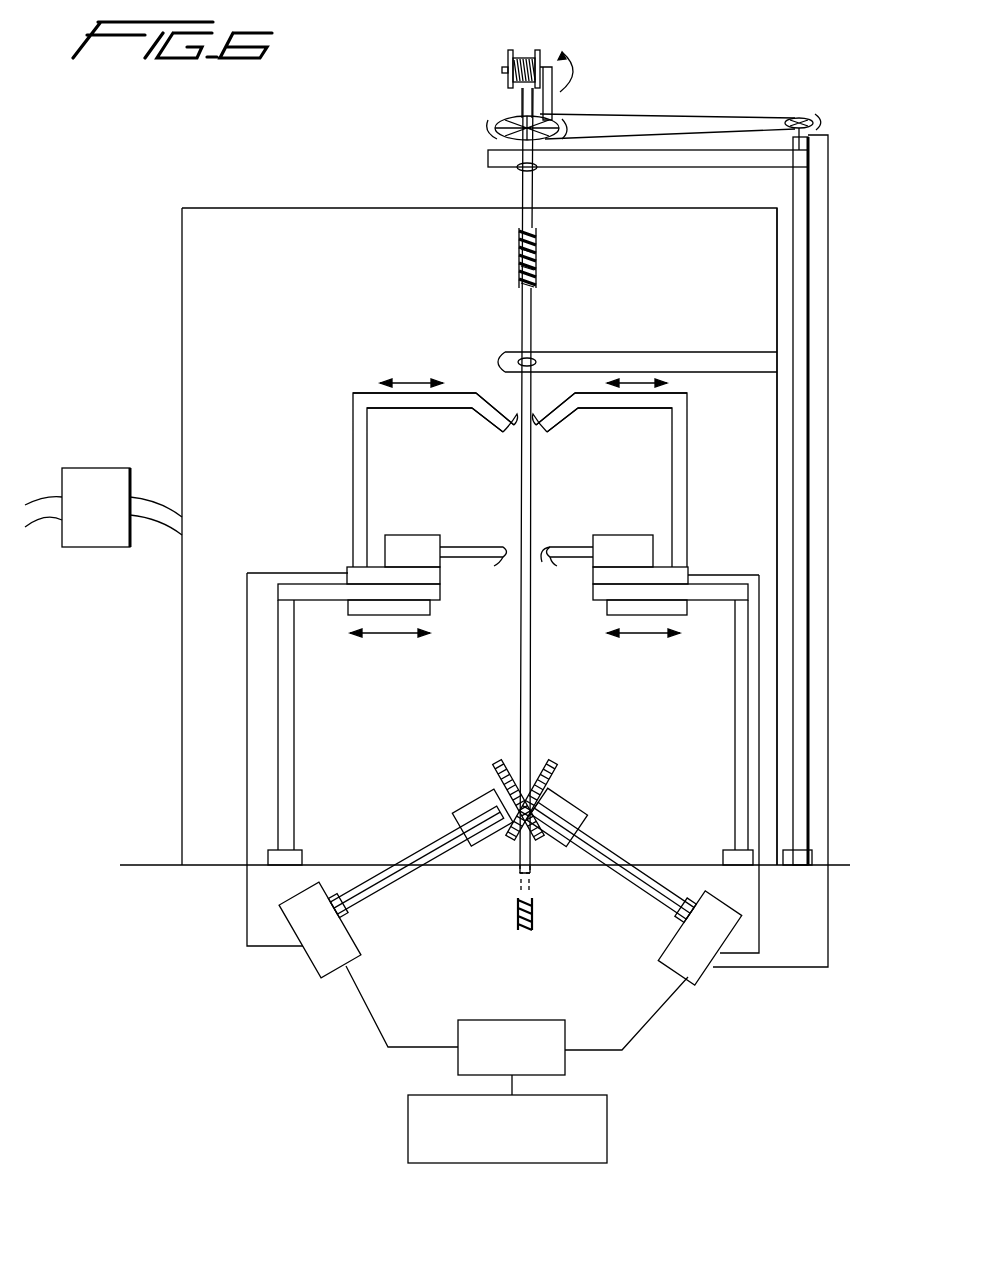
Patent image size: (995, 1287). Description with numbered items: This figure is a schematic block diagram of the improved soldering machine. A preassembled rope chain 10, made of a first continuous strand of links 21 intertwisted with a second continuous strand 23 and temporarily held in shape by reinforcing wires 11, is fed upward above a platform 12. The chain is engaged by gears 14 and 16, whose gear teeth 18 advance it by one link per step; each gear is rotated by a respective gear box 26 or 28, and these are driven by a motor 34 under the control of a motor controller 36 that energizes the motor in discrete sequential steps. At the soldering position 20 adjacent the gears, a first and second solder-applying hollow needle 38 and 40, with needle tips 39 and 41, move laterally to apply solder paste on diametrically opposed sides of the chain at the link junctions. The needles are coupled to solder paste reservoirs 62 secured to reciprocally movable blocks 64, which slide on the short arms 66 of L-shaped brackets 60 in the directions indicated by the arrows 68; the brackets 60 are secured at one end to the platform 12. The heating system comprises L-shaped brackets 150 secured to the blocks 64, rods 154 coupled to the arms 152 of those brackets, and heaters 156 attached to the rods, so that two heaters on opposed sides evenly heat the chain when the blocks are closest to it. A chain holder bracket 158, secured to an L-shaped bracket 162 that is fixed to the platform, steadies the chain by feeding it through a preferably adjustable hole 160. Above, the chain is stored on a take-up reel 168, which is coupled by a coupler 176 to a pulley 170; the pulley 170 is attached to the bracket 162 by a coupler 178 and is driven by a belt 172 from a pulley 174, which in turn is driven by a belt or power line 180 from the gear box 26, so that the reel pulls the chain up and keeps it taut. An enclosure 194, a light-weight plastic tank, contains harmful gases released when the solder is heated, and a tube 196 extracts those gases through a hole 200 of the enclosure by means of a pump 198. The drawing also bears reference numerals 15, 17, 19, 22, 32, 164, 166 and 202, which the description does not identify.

The rope chain 10 is at (542, 249).
The reinforcing wires 11 is at (525, 930).
The platform 12 is at (850, 868).
The gear 14 is at (555, 778).
The arm 15 is at (612, 858).
The gear 16 is at (496, 778).
The arm 17 is at (430, 845).
The gear teeth 18 is at (552, 763).
The threaded rod 19 is at (497, 760).
The soldering position 20 is at (543, 547).
The first continuous strand of links 21 is at (523, 255).
The shaft end 22 is at (530, 870).
The second continuous strand 23 is at (520, 268).
The gear box 26 is at (692, 975).
The gear box 28 is at (352, 940).
The base frame 32 is at (260, 948).
The motor 34 is at (548, 1022).
The motor controller 36 is at (603, 1108).
The first solder-applying hollow needle 38 is at (582, 547).
The needle tip 39 is at (546, 558).
The second solder-applying hollow needle 40 is at (476, 547).
The needle tip 41 is at (505, 558).
The L-shaped brackets 60 is at (294, 752).
The solder paste reservoirs 62 is at (414, 545).
The reciprocally movable blocks 64 is at (432, 610).
The short arms 66 is at (322, 600).
The arrows 68 is at (385, 633).
The L-shaped brackets 150 is at (353, 478).
The arms 152 is at (433, 408).
The rods 154 is at (478, 415).
The heaters 156 is at (512, 440).
The chain holder bracket 158 is at (700, 352).
The hole 160 is at (520, 355).
The L-shaped bracket 162 is at (808, 245).
The top bar 164 is at (678, 167).
The bearing 166 is at (520, 168).
The take-up reel 168 is at (538, 48).
The pulley 170 is at (507, 118).
The belt 172 is at (657, 113).
The pulley 174 is at (802, 116).
The coupler 176 is at (553, 101).
The coupler 178 is at (540, 143).
The belt or power line 180 is at (835, 180).
The enclosure 194 is at (182, 248).
The tube 196 is at (152, 505).
The pump 198 is at (100, 535).
The hole 200 is at (188, 527).
The tube 202 is at (42, 500).